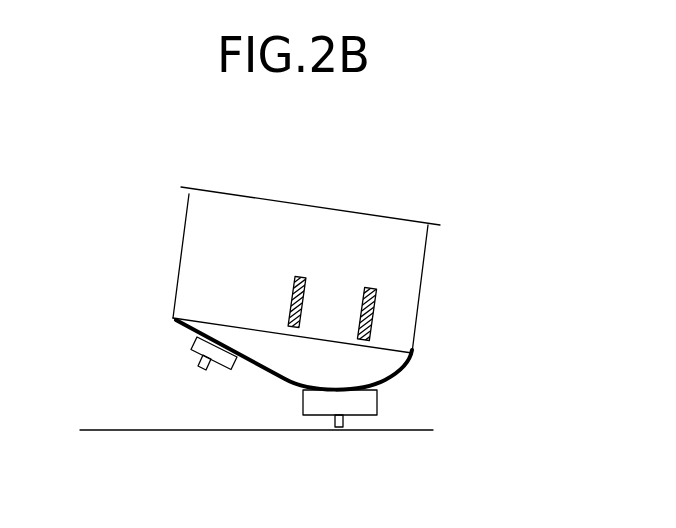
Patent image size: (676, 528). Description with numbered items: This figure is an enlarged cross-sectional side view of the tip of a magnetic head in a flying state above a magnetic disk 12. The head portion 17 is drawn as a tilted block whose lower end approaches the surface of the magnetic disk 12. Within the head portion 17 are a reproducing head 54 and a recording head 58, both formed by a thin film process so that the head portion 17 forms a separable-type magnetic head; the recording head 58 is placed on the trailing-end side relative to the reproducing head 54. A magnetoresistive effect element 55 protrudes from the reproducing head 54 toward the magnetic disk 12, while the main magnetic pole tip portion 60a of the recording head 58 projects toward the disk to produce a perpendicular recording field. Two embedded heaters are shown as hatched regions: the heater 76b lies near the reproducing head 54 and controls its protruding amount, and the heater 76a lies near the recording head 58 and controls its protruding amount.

The head portion 17 is at (343, 223).
The heater 76b is at (305, 287).
The heater 76a is at (375, 313).
The reproducing head 54 is at (194, 342).
The magnetoresistive effect element 55 is at (204, 371).
The recording head 58 is at (362, 407).
The main magnetic pole tip portion 60a is at (340, 427).
The magnetic disk 12 is at (418, 430).